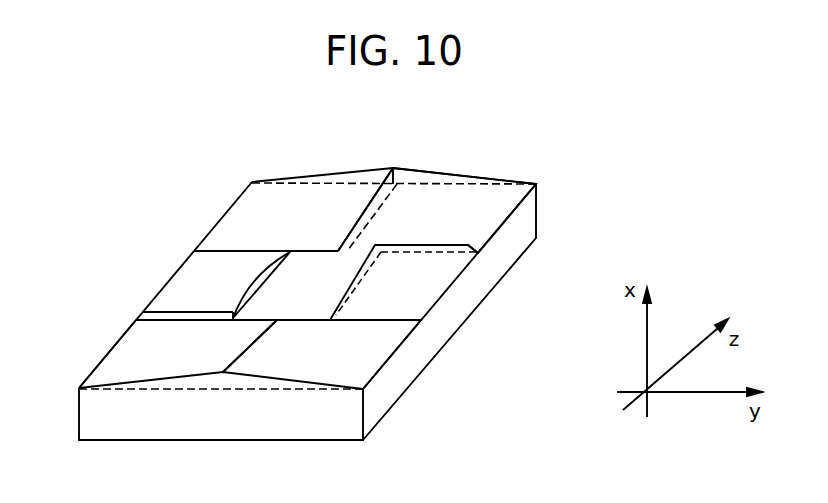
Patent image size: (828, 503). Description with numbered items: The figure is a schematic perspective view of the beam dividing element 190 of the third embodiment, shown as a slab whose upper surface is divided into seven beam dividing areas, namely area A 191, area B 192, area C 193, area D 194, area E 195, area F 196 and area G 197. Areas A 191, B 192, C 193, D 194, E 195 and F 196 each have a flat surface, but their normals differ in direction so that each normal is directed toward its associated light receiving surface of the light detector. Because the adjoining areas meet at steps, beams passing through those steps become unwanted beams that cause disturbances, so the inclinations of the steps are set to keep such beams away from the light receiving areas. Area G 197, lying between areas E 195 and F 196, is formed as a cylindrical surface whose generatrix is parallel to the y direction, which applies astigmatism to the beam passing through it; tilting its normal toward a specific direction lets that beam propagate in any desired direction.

The beam dividing element 190 is at (375, 169).
The beam dividing area A 191 is at (243, 206).
The beam dividing area B 192 is at (130, 343).
The beam dividing area C 193 is at (372, 355).
The beam dividing area D 194 is at (473, 211).
The beam dividing area E 195 is at (160, 290).
The beam dividing area F 196 is at (437, 265).
The beam dividing area G 197 is at (328, 302).